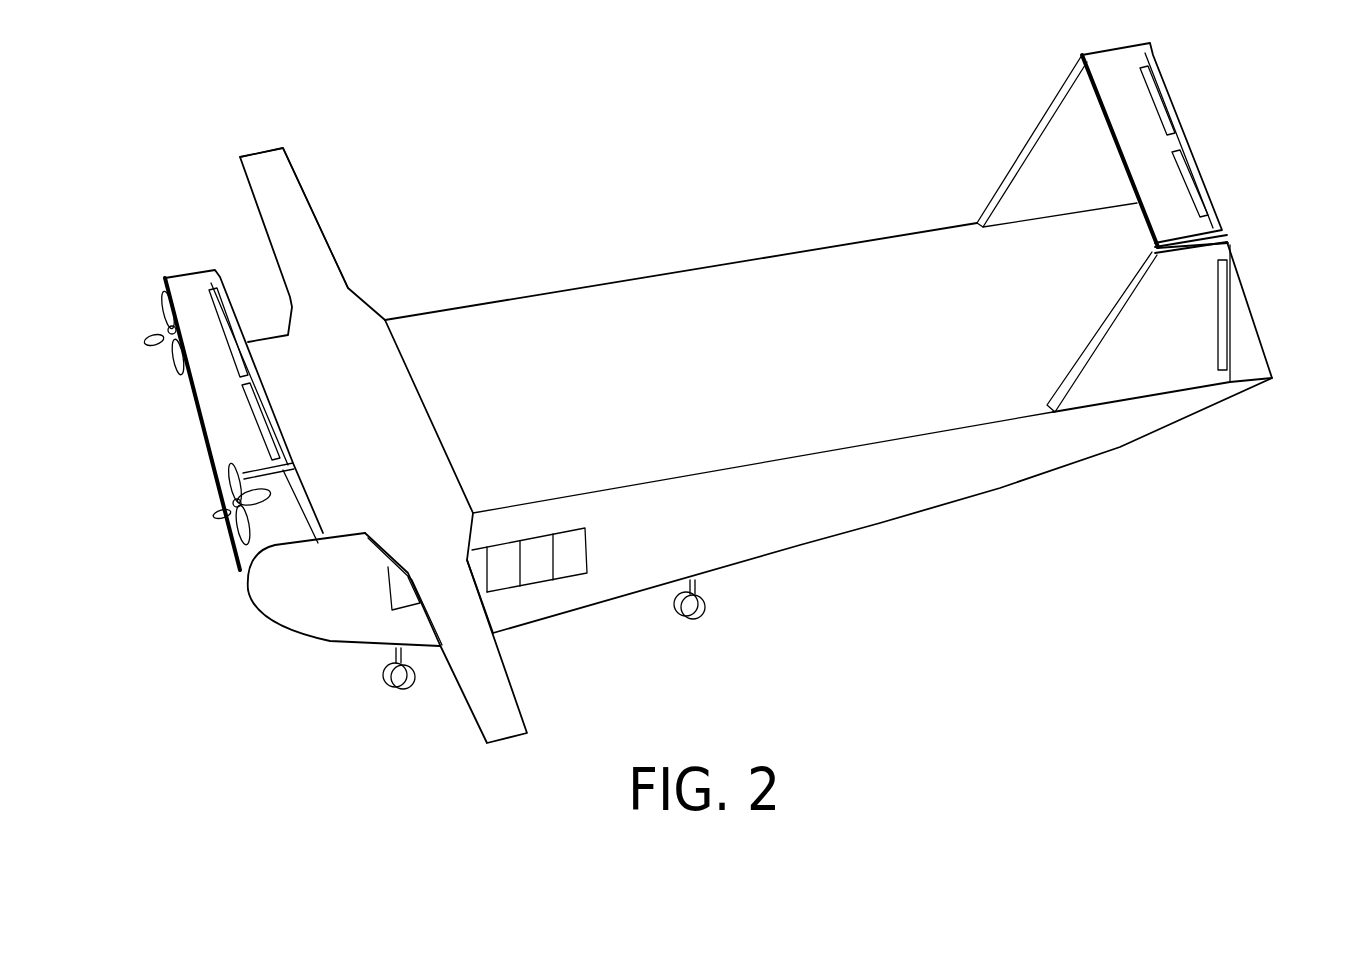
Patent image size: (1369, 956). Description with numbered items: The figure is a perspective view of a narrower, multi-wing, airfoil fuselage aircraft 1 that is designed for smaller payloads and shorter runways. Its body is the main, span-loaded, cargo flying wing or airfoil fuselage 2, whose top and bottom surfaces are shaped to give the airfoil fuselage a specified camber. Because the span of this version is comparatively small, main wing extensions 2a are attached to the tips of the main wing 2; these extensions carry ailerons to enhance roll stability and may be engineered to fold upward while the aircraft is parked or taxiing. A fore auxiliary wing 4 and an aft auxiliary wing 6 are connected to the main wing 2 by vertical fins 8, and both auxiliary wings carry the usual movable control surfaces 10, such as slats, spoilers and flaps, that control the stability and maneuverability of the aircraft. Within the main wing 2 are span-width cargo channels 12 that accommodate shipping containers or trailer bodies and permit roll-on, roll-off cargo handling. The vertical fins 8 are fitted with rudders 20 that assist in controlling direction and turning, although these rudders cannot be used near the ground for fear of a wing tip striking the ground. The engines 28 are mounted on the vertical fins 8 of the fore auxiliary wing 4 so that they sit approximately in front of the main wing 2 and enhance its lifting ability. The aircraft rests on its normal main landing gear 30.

The multi-wing, airfoil fuselage aircraft 1 is at (732, 393).
The main wing or airfoil fuselage 2 is at (756, 445).
The main wing extensions 2a is at (315, 206).
The fore auxiliary wing 4 is at (244, 383).
The aft auxiliary wing 6 is at (1137, 145).
The vertical fins 8 is at (1186, 323).
The movable control surfaces 10 is at (1219, 141).
The cargo channels 12 is at (529, 608).
The rudders 20 is at (1272, 315).
The engines 28 is at (205, 423).
The main landing gear 30 is at (579, 634).